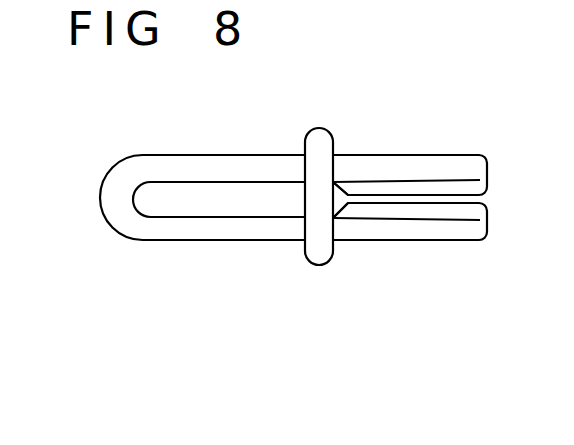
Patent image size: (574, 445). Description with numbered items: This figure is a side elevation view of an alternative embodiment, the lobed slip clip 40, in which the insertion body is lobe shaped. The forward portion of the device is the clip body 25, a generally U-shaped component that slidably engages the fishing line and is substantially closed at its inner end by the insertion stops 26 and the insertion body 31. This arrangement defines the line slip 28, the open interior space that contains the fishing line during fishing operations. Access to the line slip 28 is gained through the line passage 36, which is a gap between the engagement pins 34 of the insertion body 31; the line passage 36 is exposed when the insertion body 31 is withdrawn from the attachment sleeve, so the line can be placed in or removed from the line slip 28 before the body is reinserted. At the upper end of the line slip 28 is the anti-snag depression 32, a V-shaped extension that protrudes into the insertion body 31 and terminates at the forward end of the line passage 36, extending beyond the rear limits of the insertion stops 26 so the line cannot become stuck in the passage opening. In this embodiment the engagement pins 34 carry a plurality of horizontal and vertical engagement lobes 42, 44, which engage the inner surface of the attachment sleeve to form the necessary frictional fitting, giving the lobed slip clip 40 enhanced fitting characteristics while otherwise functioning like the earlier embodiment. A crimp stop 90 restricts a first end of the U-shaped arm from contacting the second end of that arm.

The clip body 25 is at (125, 145).
The insertion stops 26 is at (305, 128).
The line slip 28 is at (163, 215).
The insertion body 31 is at (405, 150).
The anti-snag depression 32 is at (333, 200).
The engagement pins 34 is at (362, 238).
The line passage 36 is at (400, 200).
The lobed slip clip 40 is at (337, 95).
The horizontal engagement lobes 42 is at (457, 182).
The vertical engagement lobes 44 is at (463, 250).
The crimp stop 90 is at (378, 185).